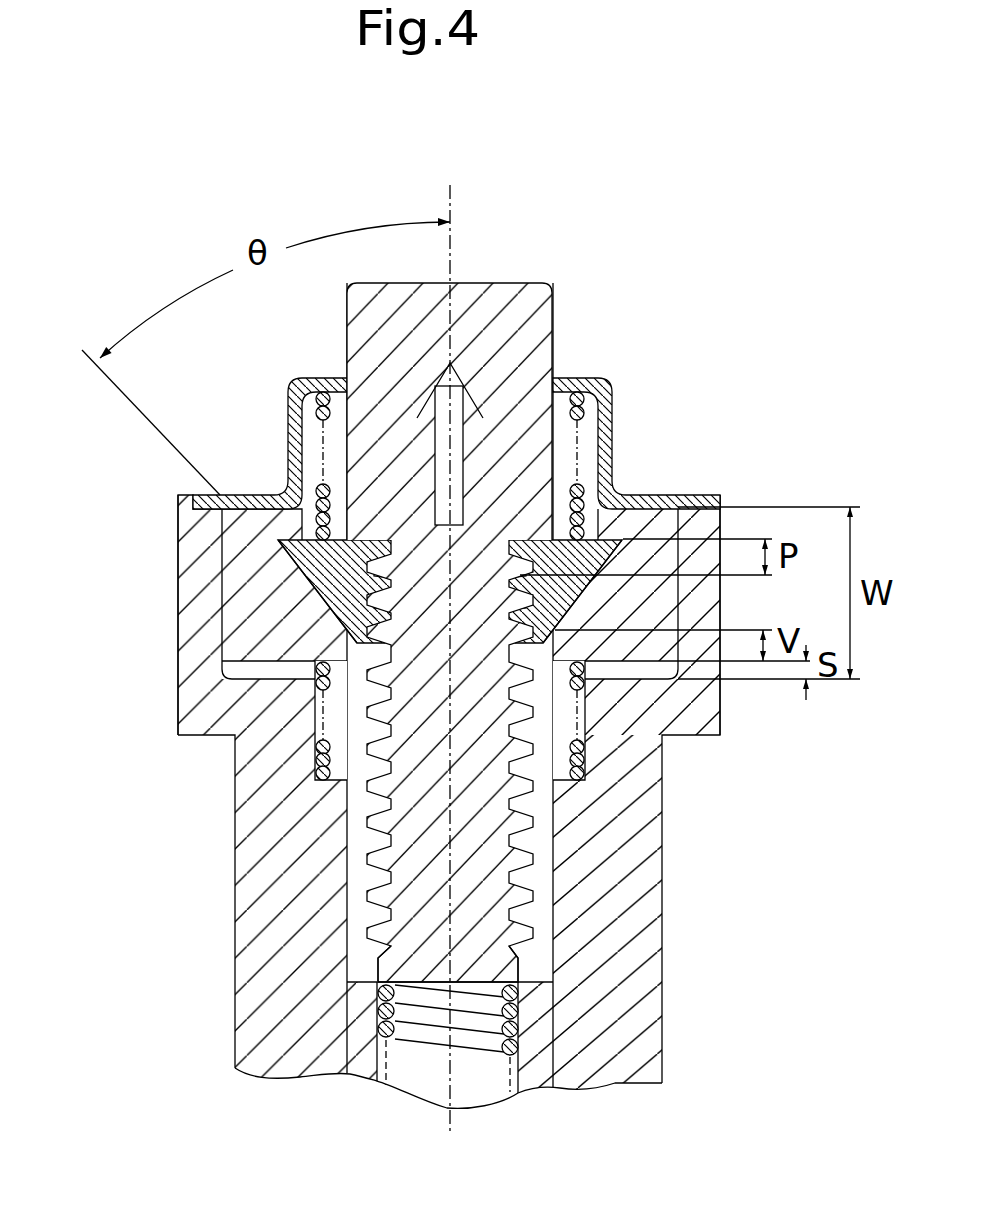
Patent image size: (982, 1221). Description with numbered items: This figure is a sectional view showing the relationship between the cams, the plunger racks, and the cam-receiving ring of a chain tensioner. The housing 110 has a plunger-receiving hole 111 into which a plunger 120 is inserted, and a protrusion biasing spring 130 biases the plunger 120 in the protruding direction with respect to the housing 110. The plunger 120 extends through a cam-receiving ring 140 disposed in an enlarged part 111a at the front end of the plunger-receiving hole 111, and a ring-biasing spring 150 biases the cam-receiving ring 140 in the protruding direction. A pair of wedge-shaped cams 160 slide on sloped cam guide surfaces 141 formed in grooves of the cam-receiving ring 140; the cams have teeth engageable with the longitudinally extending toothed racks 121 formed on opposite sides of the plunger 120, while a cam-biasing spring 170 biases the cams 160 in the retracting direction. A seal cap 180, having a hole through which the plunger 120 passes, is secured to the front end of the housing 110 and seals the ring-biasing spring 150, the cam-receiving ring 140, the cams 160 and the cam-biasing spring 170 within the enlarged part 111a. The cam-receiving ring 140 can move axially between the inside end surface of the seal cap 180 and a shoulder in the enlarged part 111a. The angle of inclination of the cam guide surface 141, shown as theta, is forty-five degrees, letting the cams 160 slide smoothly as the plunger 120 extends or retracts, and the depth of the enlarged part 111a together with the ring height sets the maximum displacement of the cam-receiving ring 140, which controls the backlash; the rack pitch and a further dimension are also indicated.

The housing 110 is at (272, 897).
The plunger-receiving hole 111 is at (540, 883).
The enlarged part of the plunger-receiving hole 111a is at (637, 670).
The plunger 120 is at (572, 591).
The racks 121 is at (523, 946).
The protrusion biasing spring 130 is at (378, 1012).
The cam-receiving ring 140 is at (268, 635).
The cam guide surface 141 is at (278, 541).
The ring-biasing spring 150 is at (318, 748).
The wedge-shaped cams 160 is at (285, 572).
The cam-biasing spring 170 is at (583, 414).
The seal cap 180 is at (612, 392).